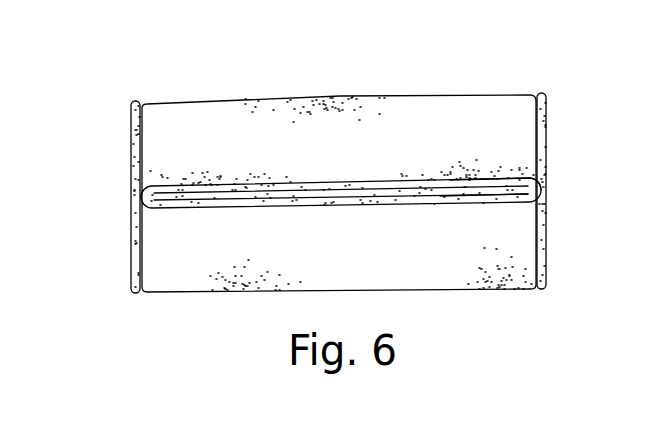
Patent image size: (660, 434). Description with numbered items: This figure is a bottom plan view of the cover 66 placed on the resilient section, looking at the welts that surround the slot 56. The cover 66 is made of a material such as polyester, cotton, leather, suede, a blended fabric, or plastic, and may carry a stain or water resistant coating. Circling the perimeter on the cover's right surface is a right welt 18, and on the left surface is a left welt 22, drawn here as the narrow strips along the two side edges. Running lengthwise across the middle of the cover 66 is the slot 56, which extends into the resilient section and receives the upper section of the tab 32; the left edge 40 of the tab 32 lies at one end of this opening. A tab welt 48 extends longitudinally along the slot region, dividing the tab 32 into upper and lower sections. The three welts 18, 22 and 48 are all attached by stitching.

The right welt 18 is at (546, 118).
The left welt 22 is at (131, 145).
The tab 32 is at (294, 190).
The left edge 40 is at (139, 196).
The tab welt 48 is at (497, 201).
The slot 56 is at (538, 177).
The cover 66 is at (449, 126).